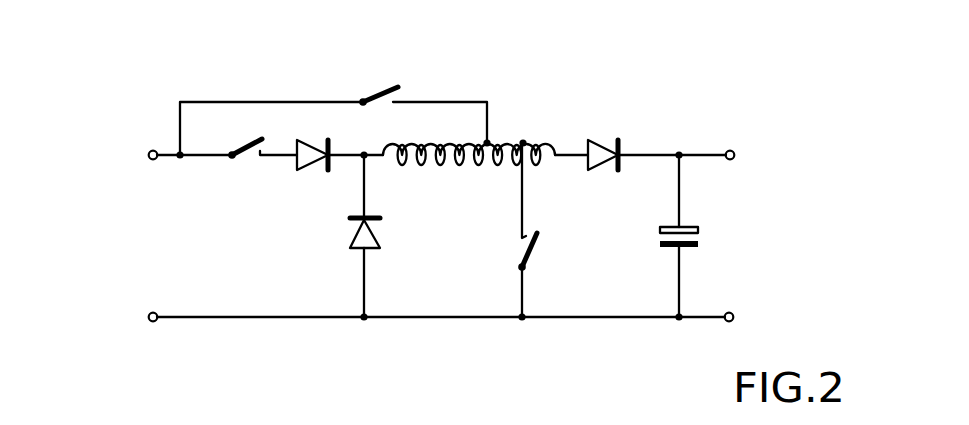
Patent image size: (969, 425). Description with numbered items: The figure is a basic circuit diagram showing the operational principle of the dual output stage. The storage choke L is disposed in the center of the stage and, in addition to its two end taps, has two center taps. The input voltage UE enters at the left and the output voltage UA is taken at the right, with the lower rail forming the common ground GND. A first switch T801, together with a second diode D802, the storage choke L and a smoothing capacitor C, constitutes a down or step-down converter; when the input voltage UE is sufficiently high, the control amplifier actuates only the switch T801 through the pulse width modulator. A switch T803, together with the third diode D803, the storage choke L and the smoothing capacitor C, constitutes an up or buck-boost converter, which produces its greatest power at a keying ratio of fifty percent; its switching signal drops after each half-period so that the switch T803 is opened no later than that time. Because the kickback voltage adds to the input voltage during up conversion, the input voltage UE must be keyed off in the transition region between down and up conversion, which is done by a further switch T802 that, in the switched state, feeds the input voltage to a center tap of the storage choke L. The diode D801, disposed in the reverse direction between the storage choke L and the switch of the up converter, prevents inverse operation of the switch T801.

The first switch T801 is at (247, 158).
The diode D801 is at (293, 173).
The further switch T802 is at (383, 84).
The storage choke L is at (513, 139).
The third diode D803 is at (608, 140).
The second diode D802 is at (380, 228).
The switch of up converter T803 is at (534, 254).
The smoothing capacitor C is at (691, 216).
The input voltage UE is at (152, 144).
The output voltage UA is at (732, 150).
The ground GND is at (150, 322).